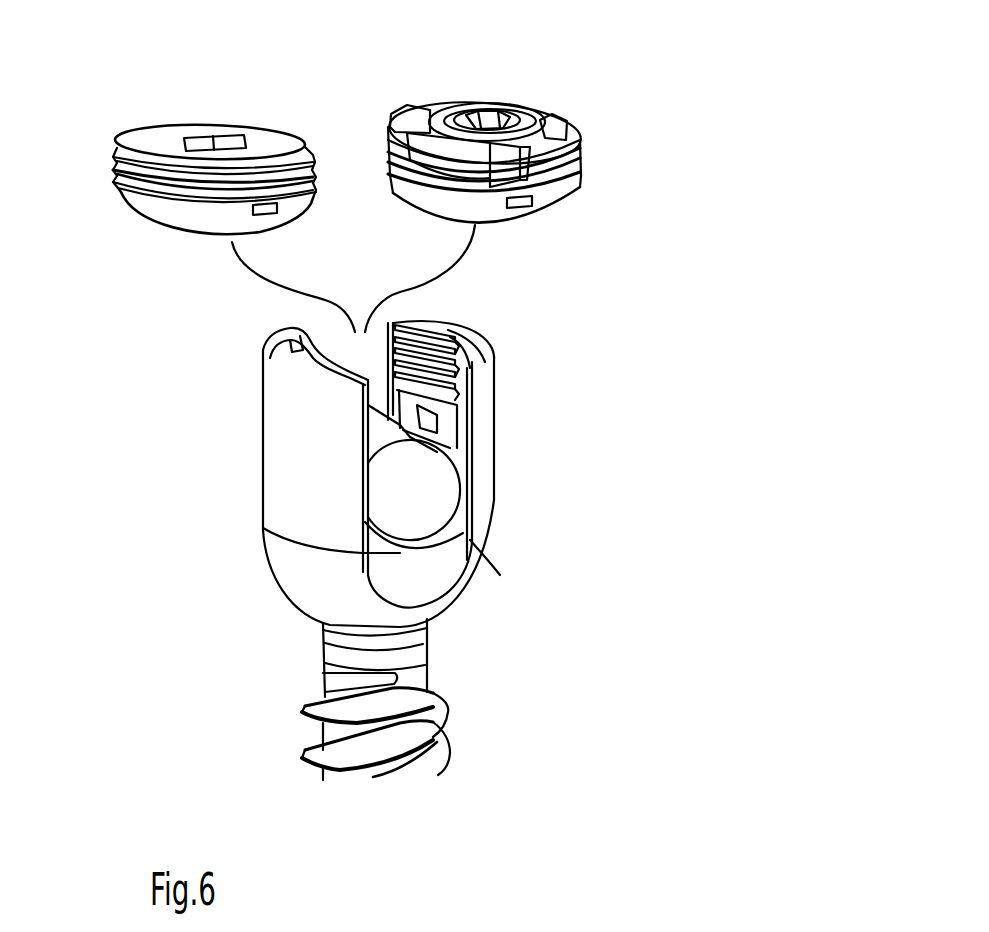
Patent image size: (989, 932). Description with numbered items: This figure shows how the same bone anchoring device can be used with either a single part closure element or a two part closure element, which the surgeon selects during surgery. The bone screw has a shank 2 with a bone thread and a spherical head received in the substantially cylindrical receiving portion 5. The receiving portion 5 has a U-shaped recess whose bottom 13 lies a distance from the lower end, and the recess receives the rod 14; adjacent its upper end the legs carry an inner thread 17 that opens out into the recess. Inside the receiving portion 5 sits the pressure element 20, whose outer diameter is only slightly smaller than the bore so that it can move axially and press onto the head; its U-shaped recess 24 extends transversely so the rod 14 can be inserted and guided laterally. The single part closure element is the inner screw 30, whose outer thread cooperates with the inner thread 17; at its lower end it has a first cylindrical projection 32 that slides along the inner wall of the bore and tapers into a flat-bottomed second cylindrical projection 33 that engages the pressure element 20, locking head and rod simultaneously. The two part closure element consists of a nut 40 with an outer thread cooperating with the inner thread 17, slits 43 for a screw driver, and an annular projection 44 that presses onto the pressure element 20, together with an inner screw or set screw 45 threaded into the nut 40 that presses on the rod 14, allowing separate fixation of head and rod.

The shank 2 is at (437, 738).
The receiving portion 5 is at (494, 480).
The bottom of the U-shaped recess 13 is at (420, 540).
The rod 14 is at (432, 507).
The inner thread 17 is at (450, 332).
The pressure element 20 is at (445, 437).
The U-shaped recess 24 is at (362, 553).
The inner screw 30 is at (153, 123).
The first cylindrical projection 32 is at (128, 207).
The second cylindrical projection 33 is at (177, 235).
The nut 40 is at (585, 146).
The slits 43 is at (550, 124).
The annular projection 44 is at (503, 216).
The inner screw or set screw 45 is at (452, 102).